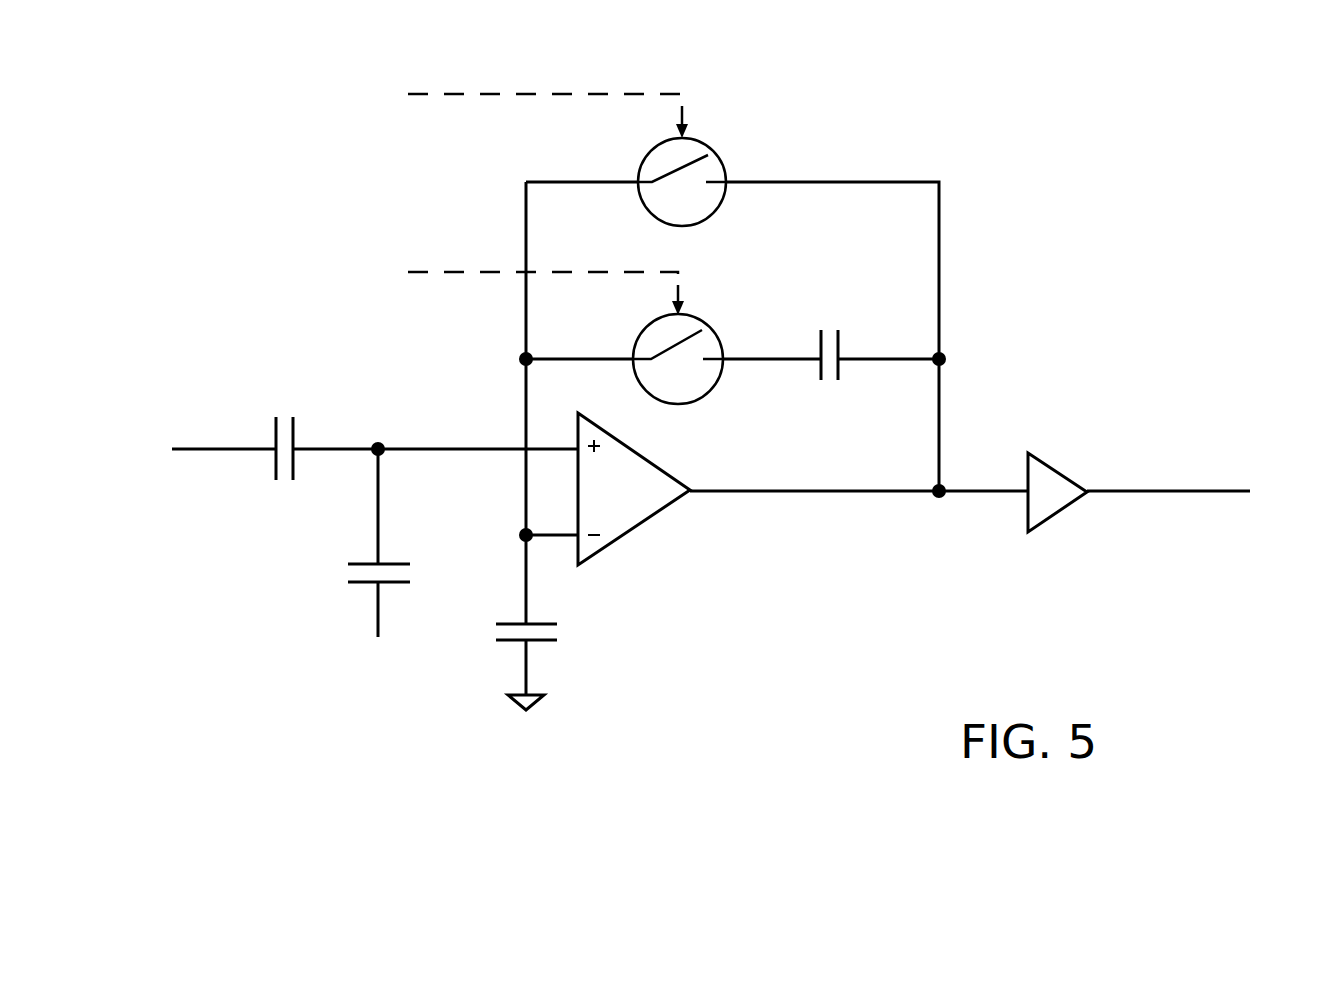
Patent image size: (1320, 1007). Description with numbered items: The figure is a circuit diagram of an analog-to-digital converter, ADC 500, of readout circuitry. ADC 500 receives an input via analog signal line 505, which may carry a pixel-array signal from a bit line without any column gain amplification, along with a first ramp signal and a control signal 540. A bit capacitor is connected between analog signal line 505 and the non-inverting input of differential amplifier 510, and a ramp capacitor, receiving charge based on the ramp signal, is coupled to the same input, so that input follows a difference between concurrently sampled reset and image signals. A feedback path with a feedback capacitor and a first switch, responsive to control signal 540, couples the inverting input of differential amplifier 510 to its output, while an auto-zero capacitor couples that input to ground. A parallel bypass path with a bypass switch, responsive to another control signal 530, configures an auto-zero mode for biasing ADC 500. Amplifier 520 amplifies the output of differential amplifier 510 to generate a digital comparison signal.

The ADC 500 is at (232, 199).
The analog signal line 505 is at (224, 435).
The differential amplifier 510 is at (633, 531).
The amplifier 520 is at (1048, 520).
The control signal 530 is at (589, 147).
The control signal 540 is at (588, 325).